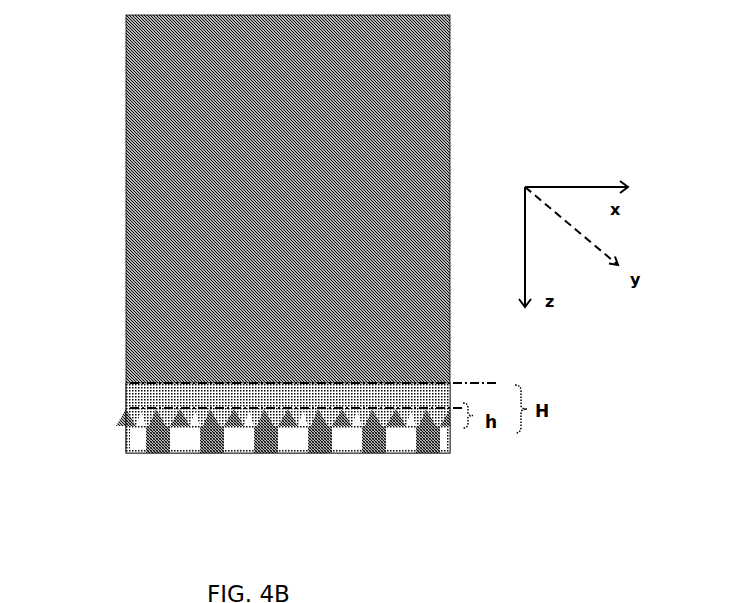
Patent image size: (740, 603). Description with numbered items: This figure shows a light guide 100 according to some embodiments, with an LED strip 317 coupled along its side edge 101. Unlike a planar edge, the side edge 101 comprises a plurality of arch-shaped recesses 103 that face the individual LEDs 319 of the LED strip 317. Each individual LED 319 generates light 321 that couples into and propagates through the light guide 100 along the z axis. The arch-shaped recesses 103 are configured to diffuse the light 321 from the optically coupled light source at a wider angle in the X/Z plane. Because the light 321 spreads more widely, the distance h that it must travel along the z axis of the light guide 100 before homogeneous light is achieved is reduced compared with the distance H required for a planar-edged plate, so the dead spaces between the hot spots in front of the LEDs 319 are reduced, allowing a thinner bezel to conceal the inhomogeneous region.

The light guide 100 is at (305, 220).
The light 321 is at (147, 400).
The arch-shaped recesses 103 is at (145, 424).
The side edge 101 is at (122, 447).
The LEDs 319 is at (427, 442).
The LED strip 317 is at (447, 452).